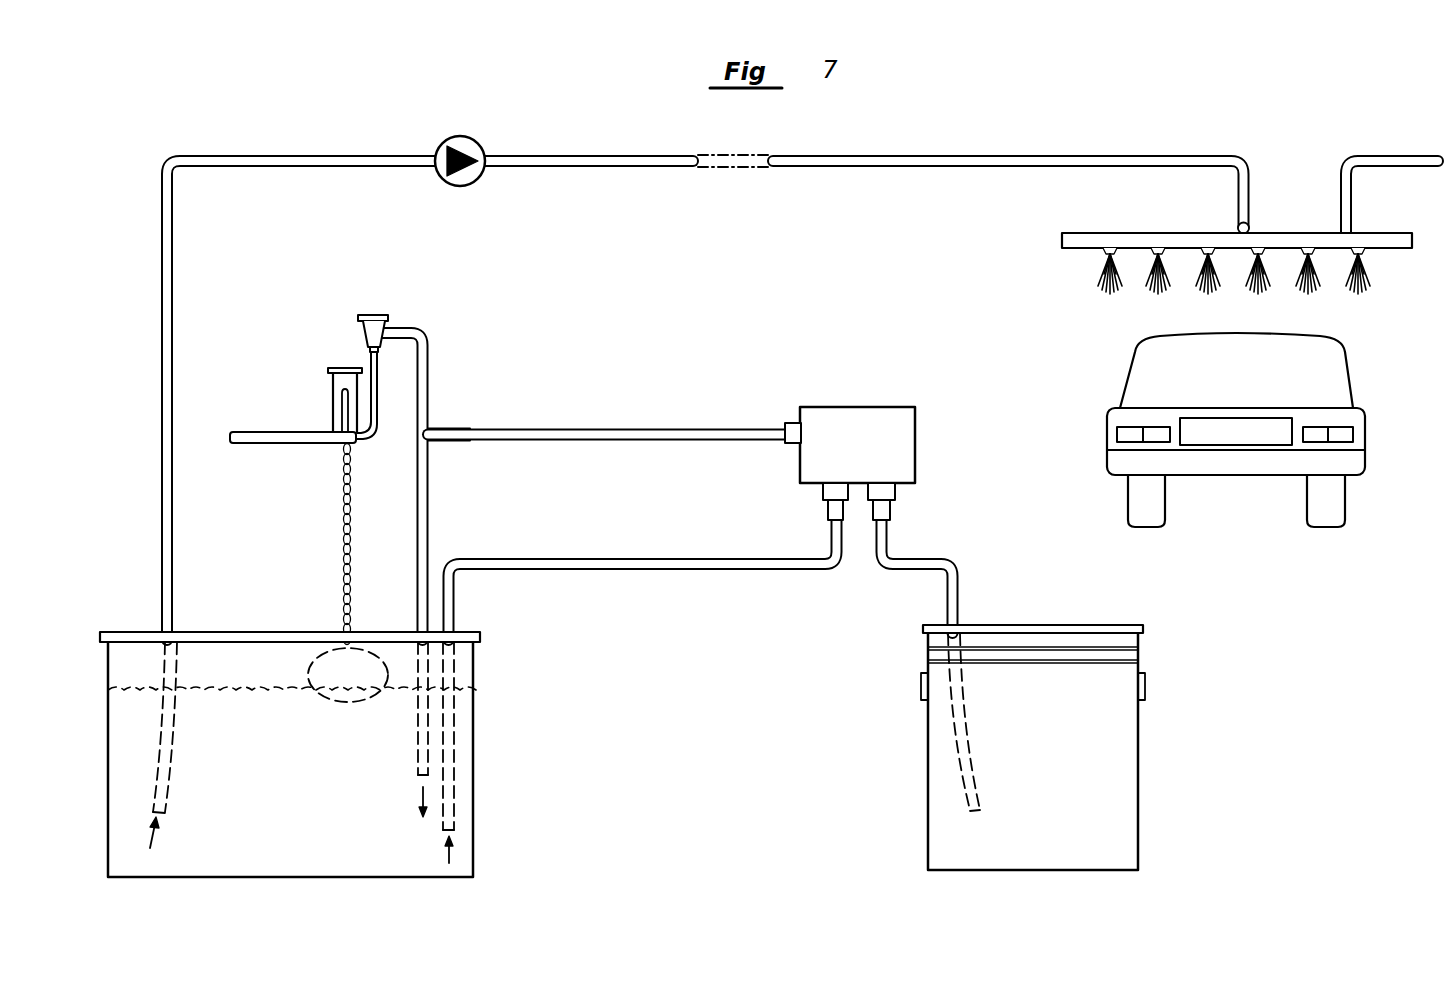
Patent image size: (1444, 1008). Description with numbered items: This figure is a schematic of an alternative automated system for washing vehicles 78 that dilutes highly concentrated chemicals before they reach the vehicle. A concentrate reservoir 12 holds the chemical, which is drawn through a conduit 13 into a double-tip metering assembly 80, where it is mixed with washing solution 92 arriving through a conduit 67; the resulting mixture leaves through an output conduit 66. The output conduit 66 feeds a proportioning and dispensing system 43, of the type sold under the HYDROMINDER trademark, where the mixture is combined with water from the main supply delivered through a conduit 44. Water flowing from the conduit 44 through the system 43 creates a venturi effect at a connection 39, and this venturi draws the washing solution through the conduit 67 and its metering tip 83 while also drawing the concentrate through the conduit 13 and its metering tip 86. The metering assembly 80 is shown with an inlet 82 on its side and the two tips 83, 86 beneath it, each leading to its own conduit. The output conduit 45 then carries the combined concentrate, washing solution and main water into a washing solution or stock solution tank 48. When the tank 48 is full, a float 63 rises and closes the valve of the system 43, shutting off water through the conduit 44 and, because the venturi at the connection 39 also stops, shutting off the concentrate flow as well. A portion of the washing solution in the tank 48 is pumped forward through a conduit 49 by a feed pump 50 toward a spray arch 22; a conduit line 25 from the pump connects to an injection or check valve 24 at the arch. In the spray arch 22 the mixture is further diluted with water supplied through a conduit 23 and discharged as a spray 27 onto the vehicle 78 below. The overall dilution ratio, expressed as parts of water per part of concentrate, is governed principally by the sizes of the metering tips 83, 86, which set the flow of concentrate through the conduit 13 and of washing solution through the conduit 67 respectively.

The concentrate reservoir 12 is at (1138, 772).
The conduit 13 is at (960, 594).
The spray arch 22 is at (1130, 232).
The conduit 23 is at (1377, 150).
The injection or check valve 24 is at (1250, 226).
The conduit line 25 is at (820, 153).
The spray 27 is at (1186, 300).
The connection 39 is at (432, 428).
The proportioning and dispensing system 43 is at (328, 386).
The conduit 44 is at (248, 432).
The output conduit 45 is at (430, 522).
The washing solution tank 48 is at (372, 877).
The conduit 49 is at (268, 157).
The feed pump 50 is at (476, 139).
The float 63 is at (323, 643).
The output conduit 66 is at (600, 428).
The conduit 67 is at (632, 557).
The vehicle 78 is at (304, 482).
The double-tip metering assembly 80 is at (862, 398).
The inlet 82 is at (790, 423).
The metering tip 83 is at (828, 512).
The metering tip 86 is at (895, 512).
The washing solution 92 is at (250, 855).